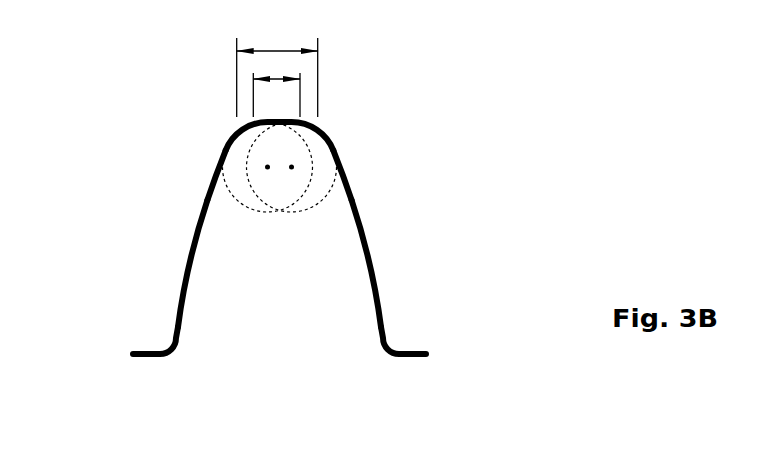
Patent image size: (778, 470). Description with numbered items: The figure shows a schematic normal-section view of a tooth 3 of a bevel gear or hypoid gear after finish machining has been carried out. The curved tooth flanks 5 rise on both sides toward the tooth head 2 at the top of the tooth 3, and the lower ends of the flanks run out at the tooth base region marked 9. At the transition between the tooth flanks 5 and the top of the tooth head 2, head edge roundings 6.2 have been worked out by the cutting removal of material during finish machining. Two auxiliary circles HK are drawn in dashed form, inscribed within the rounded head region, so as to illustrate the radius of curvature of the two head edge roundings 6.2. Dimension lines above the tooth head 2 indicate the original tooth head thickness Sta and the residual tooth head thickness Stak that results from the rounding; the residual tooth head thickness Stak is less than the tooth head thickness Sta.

The tooth head 2 is at (445, 111).
The tooth 3 is at (78, 110).
The tooth flanks 5 is at (198, 222).
The head edge roundings 6.2 is at (228, 122).
The tooth root / base 9 is at (141, 355).
The auxiliary circles HK is at (222, 182).
The tooth head thickness Sta is at (277, 70).
The residual tooth head thickness Stak is at (276, 95).